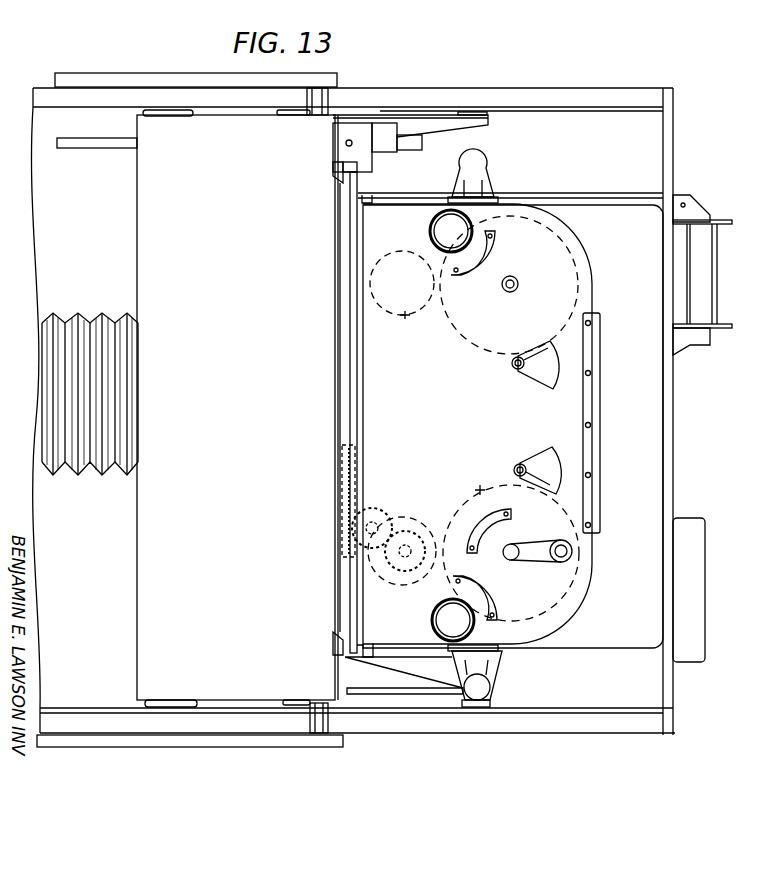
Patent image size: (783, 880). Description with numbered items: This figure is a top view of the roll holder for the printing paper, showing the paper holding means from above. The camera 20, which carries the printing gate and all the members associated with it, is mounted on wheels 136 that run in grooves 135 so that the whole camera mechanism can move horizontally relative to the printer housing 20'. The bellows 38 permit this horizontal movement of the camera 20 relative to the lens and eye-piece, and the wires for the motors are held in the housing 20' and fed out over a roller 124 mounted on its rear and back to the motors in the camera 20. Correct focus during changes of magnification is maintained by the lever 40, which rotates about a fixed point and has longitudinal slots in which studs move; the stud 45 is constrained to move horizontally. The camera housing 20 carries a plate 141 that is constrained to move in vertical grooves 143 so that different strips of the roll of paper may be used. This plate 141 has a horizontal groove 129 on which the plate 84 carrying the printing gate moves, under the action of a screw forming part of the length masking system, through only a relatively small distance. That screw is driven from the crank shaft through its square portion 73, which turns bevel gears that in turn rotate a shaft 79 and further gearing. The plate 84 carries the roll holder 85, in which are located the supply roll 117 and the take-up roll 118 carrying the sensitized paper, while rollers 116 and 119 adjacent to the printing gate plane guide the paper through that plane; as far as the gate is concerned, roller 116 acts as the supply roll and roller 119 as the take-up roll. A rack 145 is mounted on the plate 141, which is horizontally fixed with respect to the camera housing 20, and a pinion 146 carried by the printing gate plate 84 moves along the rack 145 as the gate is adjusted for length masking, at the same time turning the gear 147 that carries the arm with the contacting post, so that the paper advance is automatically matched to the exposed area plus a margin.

The camera 20 is at (237, 407).
The printer housing 20' is at (688, 616).
The bellows 38 is at (70, 320).
The lever 40 is at (85, 78).
The stud 45 is at (322, 100).
The square portion of the shaft 73 is at (80, 146).
The shaft 79 is at (345, 143).
The plate 84 is at (358, 290).
The roll holder 85 is at (481, 424).
The roller 116 is at (405, 320).
The supply roll 117 is at (483, 348).
The take-up roll 118 is at (481, 486).
The roller 119 is at (413, 520).
The roller 124 is at (705, 272).
The groove 129 is at (352, 192).
The grooves 135 is at (497, 722).
The wheels 136 is at (168, 707).
The plate 141 is at (342, 387).
The vertical grooves 143 is at (335, 180).
The rack 145 is at (347, 460).
The pinion 146 is at (347, 507).
The gear 147 is at (352, 567).